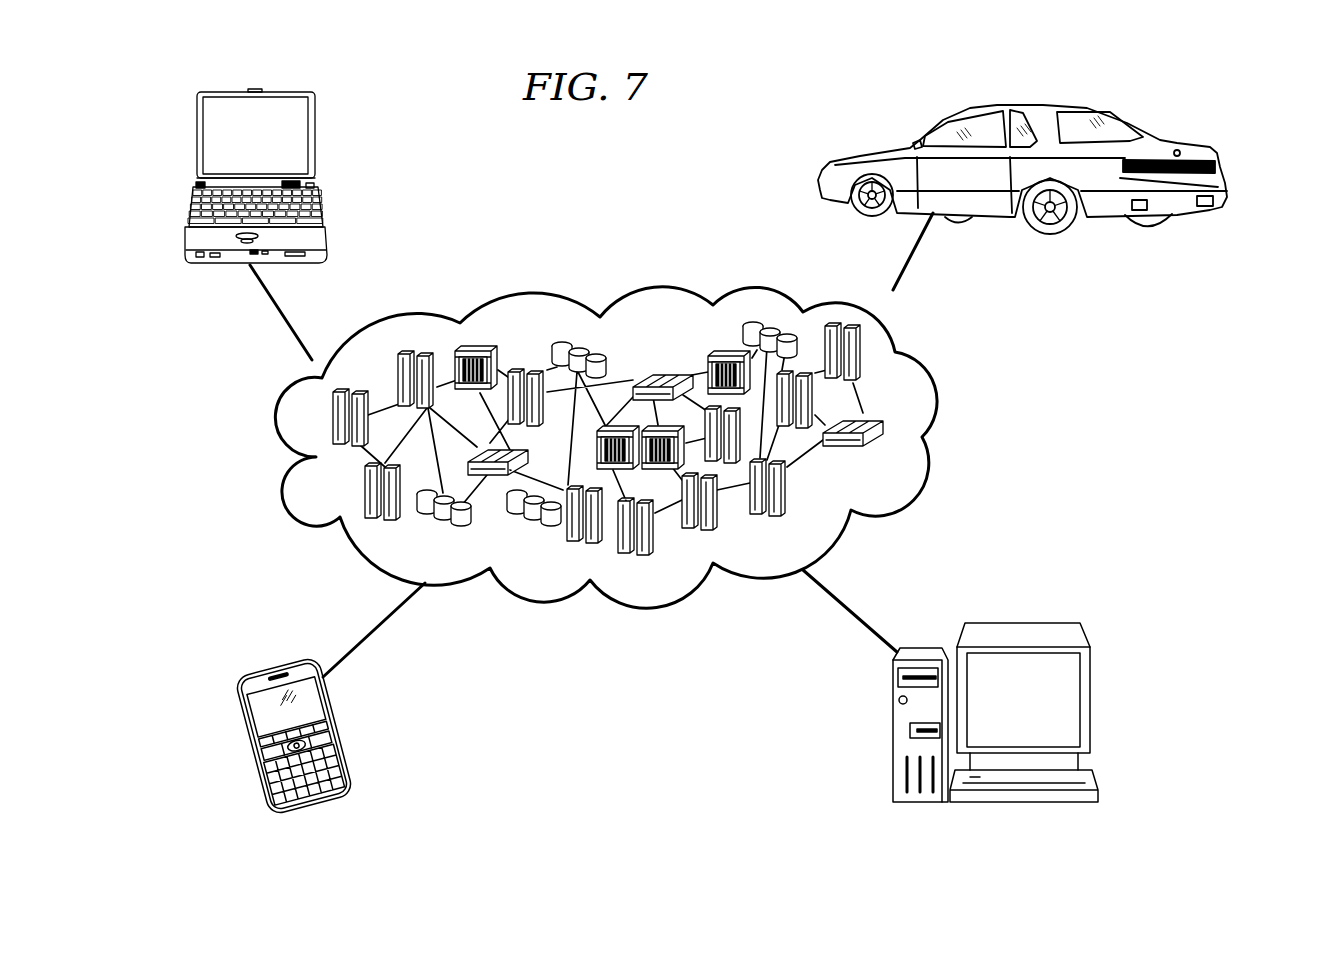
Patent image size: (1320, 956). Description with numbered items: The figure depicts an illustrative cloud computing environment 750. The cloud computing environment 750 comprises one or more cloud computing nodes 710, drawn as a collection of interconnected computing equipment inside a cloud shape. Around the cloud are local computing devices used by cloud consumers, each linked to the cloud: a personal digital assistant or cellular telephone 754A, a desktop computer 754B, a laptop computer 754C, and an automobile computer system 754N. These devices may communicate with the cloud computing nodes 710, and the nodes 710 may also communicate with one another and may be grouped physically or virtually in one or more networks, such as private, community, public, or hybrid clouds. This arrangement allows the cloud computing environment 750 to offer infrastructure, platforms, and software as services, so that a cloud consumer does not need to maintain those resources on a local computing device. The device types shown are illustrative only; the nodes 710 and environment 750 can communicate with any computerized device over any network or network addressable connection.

The cloud computing environment 750 is at (930, 376).
The cloud computing nodes 710 is at (886, 449).
The personal digital assistant or cellular telephone 754A is at (237, 724).
The desktop computer 754B is at (1022, 623).
The laptop computer 754C is at (197, 129).
The automobile computer system 754N is at (1192, 142).